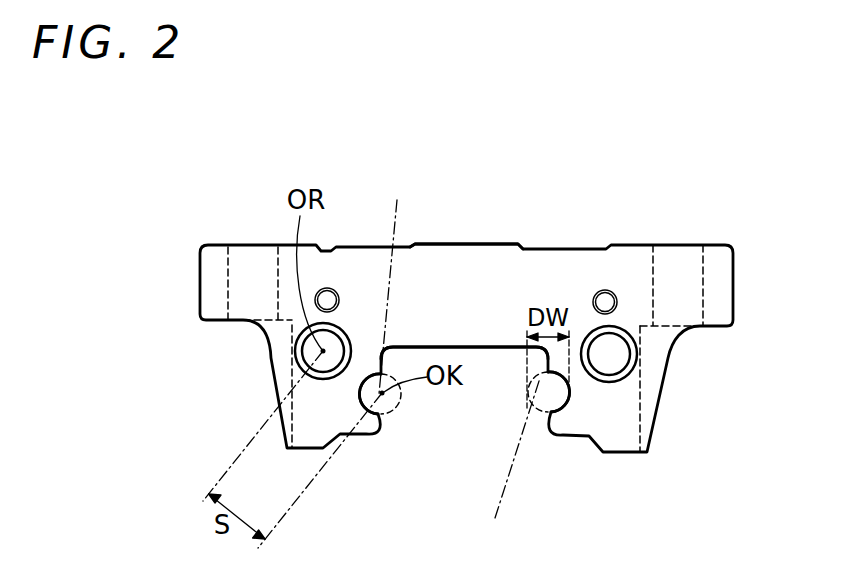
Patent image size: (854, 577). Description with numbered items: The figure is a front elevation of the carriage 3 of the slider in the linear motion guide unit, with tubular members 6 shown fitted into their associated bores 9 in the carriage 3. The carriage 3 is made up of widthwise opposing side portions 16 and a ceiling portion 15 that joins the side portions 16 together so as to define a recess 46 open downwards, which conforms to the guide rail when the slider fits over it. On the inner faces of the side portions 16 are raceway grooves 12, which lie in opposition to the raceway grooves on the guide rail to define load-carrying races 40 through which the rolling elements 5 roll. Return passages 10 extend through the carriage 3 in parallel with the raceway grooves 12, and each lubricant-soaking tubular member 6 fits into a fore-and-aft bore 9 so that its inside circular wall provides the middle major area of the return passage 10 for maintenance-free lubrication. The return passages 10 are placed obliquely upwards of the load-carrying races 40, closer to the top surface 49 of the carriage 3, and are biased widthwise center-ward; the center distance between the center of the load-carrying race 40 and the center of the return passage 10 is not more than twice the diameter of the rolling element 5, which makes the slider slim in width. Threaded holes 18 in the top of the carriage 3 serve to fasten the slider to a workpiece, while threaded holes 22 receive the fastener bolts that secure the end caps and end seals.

The carriage 3 is at (634, 246).
The rolling element 5 is at (398, 405).
The tubular member 6 is at (296, 349).
The fore-and-aft bore 9 is at (341, 329).
The return passage 10 is at (306, 361).
The raceway groove 12 is at (384, 400).
The ceiling portion 15 is at (457, 283).
The side portion 16 is at (661, 376).
The threaded hole 18 is at (231, 265).
The threaded hole 22 is at (604, 290).
The load-carrying race 40 is at (459, 361).
The recess 46 is at (477, 349).
The top surface 49 is at (484, 247).